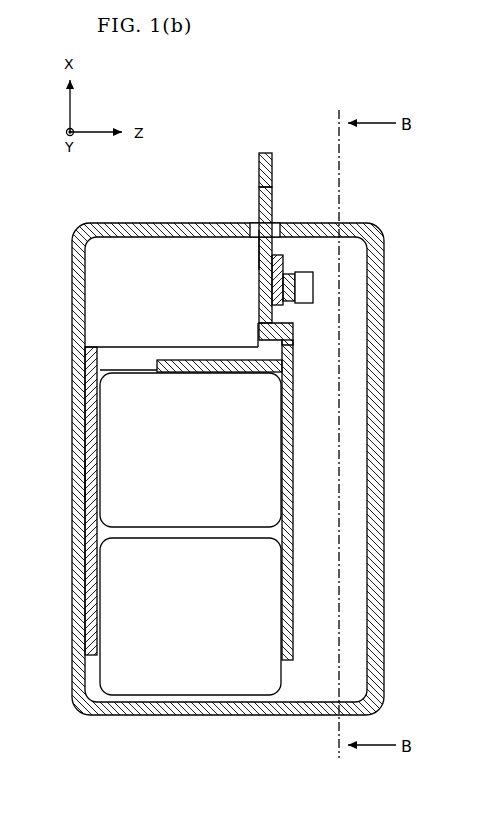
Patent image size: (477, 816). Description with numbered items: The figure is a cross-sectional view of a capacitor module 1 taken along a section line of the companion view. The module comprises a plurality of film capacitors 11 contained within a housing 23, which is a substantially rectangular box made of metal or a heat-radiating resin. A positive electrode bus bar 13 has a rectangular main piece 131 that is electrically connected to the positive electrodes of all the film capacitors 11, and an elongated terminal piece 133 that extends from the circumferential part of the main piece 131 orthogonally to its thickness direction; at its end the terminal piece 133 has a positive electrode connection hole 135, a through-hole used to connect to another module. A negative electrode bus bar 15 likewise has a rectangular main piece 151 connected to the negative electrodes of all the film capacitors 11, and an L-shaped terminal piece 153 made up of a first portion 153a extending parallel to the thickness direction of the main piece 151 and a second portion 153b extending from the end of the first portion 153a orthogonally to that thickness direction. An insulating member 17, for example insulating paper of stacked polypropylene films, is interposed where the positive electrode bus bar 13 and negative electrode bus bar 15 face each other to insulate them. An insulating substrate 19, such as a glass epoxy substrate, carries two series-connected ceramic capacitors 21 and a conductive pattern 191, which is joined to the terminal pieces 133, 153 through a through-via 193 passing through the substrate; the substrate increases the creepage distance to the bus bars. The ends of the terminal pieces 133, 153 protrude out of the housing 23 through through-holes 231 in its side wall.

The capacitor module 1 is at (210, 472).
The film capacitor 11 is at (133, 468).
The positive electrode bus bar 13 is at (359, 423).
The main piece 131 is at (292, 562).
The terminal piece 133 is at (267, 205).
The positive electrode connection hole 135 is at (258, 168).
The negative electrode bus bar 15 is at (134, 465).
The main piece 151 is at (63, 470).
The terminal piece 153 is at (150, 465).
The first portion 153a is at (110, 345).
The second portion 153b is at (257, 335).
The insulating member 17 is at (245, 373).
The insulating substrate 19 is at (294, 320).
The conductive pattern 191 is at (249, 221).
The through-via 193 is at (260, 283).
The ceramic capacitor 21 is at (313, 290).
The housing 23 is at (212, 715).
The through-hole 231 is at (257, 253).